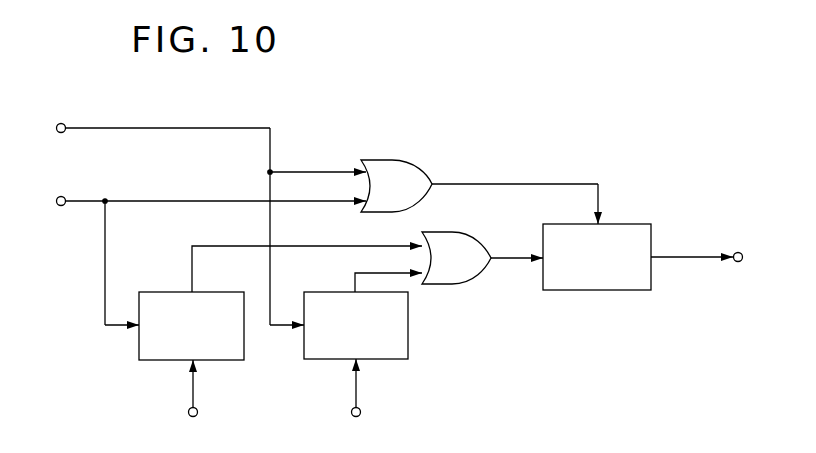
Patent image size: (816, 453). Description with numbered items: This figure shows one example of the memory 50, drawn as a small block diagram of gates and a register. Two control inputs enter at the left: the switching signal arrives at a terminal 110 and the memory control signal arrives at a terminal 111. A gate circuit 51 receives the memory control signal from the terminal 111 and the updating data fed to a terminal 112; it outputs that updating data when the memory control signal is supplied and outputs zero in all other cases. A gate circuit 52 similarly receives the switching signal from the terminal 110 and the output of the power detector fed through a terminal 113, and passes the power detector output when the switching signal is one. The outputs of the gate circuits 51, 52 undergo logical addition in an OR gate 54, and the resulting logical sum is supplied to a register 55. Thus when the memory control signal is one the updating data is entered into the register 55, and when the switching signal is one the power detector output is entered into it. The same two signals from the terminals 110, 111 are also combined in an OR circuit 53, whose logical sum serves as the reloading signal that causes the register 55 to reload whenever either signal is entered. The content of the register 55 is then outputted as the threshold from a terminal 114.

The memory 50 is at (104, 342).
The gate circuit 51 is at (155, 292).
The gate circuit 52 is at (408, 318).
The OR circuit 53 is at (400, 160).
The OR gate 54 is at (462, 232).
The register 55 is at (620, 224).
The terminal 110 is at (58, 124).
The terminal 111 is at (58, 197).
The terminal 112 is at (188, 413).
The terminal 113 is at (351, 413).
The terminal 114 is at (754, 229).